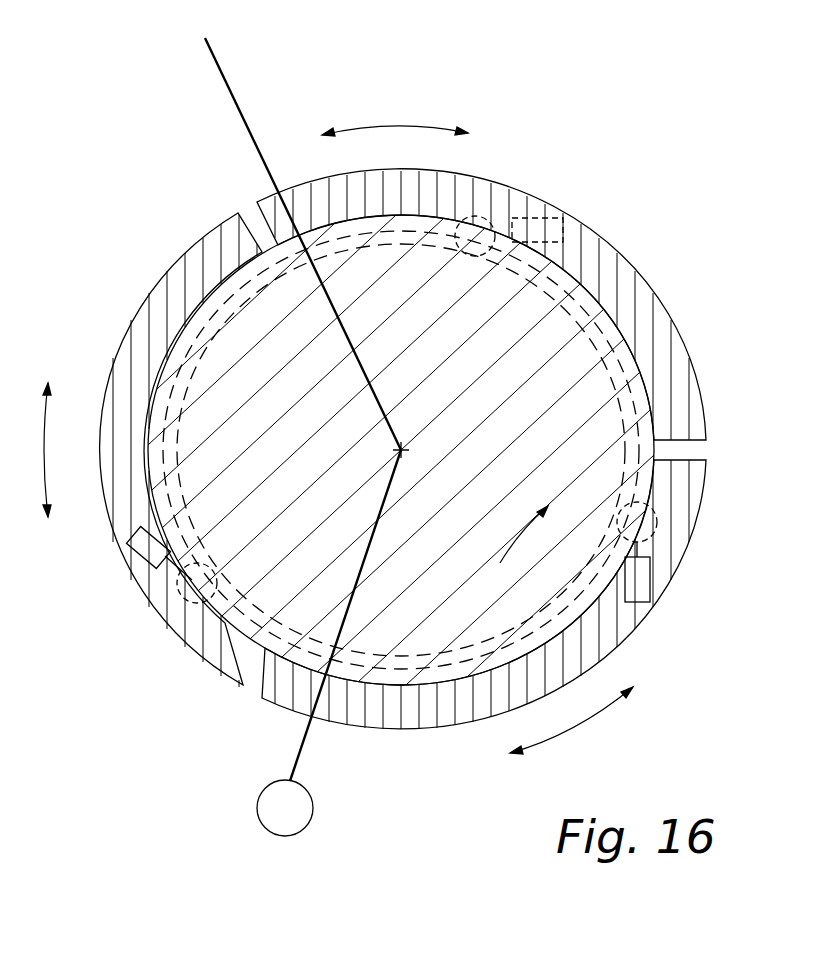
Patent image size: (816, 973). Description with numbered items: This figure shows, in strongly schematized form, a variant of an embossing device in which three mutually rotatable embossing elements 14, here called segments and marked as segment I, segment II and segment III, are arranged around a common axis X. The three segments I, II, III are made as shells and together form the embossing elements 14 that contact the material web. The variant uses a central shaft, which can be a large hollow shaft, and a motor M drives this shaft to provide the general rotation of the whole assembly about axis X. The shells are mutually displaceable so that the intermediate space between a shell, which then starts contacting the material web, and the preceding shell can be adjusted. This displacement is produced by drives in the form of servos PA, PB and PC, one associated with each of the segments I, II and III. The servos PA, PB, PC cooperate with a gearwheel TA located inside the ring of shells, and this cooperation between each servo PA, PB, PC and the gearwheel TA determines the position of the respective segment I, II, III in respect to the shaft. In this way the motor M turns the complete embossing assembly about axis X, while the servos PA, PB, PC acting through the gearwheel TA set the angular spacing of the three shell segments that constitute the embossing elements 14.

The embossing elements 14 is at (405, 476).
The segment I is at (613, 277).
The segment II is at (157, 317).
The segment III is at (673, 536).
The gearwheel TA is at (605, 362).
The servo PA is at (548, 207).
The servo PB is at (148, 562).
The servo PC is at (633, 593).
The axis X is at (294, 226).
The motor M is at (329, 643).